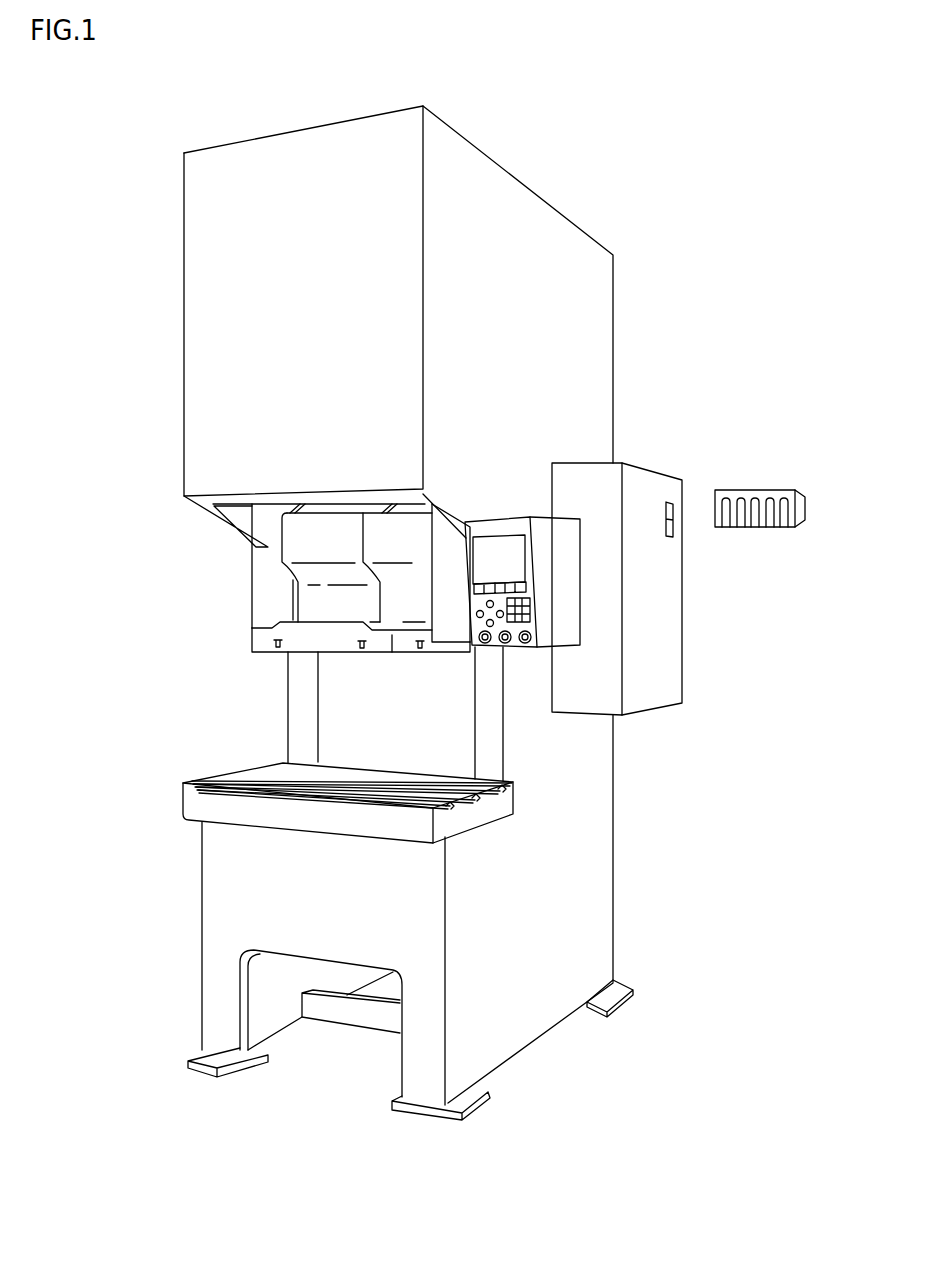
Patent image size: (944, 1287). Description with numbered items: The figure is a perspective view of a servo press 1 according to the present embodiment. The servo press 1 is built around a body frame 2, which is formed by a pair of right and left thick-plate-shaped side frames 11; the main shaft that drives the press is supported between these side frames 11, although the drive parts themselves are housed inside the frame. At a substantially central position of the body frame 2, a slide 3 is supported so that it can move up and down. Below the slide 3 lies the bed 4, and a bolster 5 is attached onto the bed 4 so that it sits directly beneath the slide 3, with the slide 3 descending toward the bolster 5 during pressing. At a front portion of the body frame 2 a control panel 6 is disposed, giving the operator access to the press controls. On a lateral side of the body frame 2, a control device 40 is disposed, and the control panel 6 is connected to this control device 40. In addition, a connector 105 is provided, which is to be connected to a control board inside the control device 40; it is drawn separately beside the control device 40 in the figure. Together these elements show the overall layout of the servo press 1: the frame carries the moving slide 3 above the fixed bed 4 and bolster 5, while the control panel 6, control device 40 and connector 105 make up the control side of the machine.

The servo press 1 is at (582, 115).
The body frame 2 is at (453, 544).
The side frames 11 is at (593, 283).
The slide 3 is at (307, 638).
The bed 4 is at (215, 893).
The bolster 5 is at (190, 798).
The control panel 6 is at (492, 515).
The control device 40 is at (665, 632).
The connector 105 is at (780, 467).